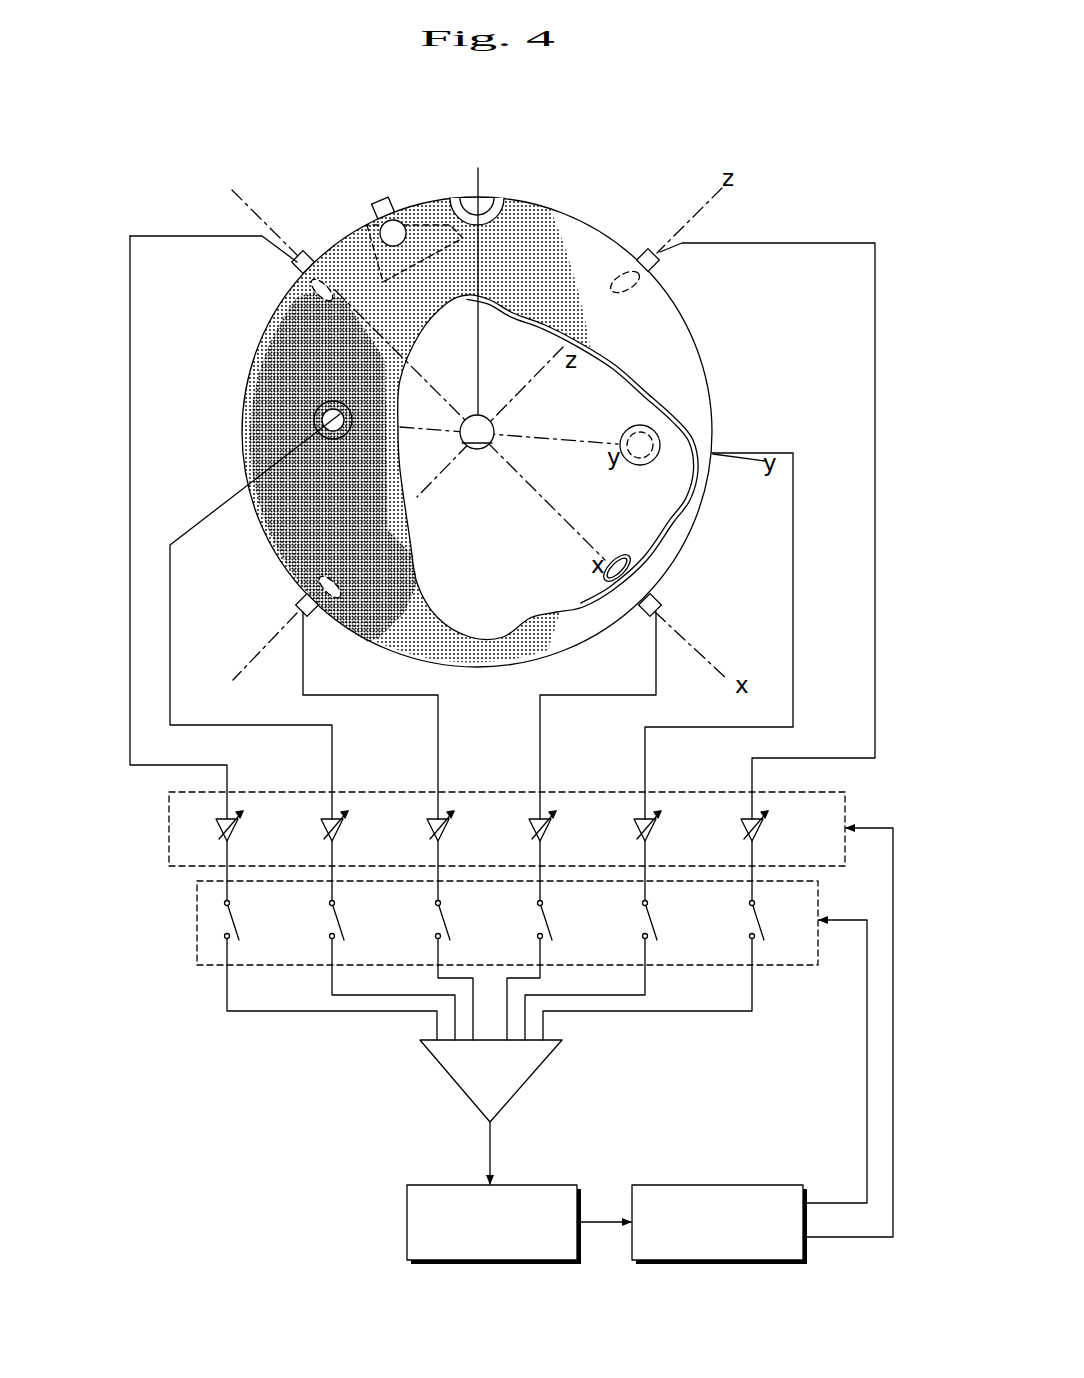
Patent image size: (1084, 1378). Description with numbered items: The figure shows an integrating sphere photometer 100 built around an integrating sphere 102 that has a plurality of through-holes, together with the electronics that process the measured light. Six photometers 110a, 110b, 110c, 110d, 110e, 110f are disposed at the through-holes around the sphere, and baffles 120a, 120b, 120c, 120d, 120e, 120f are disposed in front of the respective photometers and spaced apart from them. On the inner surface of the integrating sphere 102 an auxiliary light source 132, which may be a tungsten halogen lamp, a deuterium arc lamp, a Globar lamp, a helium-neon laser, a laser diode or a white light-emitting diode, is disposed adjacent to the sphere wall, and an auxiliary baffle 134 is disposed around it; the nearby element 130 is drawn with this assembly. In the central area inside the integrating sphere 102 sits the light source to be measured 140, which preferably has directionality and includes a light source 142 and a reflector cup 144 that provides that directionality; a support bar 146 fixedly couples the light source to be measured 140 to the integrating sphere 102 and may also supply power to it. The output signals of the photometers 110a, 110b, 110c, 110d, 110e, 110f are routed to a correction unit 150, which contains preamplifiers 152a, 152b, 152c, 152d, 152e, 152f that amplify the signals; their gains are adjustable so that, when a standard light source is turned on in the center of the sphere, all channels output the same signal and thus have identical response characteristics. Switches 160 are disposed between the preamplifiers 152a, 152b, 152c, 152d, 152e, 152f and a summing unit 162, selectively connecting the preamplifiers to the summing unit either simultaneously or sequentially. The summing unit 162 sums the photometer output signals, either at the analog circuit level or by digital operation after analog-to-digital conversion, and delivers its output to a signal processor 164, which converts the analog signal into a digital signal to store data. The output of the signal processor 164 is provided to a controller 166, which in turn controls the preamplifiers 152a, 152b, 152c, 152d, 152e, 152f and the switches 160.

The integrating sphere photometer 100 is at (855, 124).
The integrating sphere 102 is at (562, 205).
The photometer 110a is at (661, 603).
The photometer 110b is at (659, 440).
The photometer 110c is at (645, 250).
The photometer 110d is at (304, 254).
The photometer 110e is at (320, 422).
The photometer 110f is at (299, 601).
The baffle 120a is at (634, 562).
The baffle 120b is at (655, 431).
The baffle 120c is at (643, 284).
The baffle 120d is at (316, 292).
The baffle 120e is at (318, 412).
The baffle 120f is at (336, 600).
The light source 130 is at (378, 202).
The auxiliary light source 132 is at (392, 220).
The auxiliary baffle 134 is at (432, 236).
The light source to be measured 140 is at (479, 487).
The light source 142 is at (468, 450).
The reflector cup 144 is at (486, 450).
The support bar 146 is at (478, 168).
The correction unit 150 is at (168, 831).
The preamplifier 152a is at (552, 840).
The preamplifier 152b is at (657, 840).
The preamplifier 152c is at (764, 840).
The preamplifier 152d is at (239, 840).
The preamplifier 152e is at (344, 840).
The preamplifier 152f is at (450, 840).
The switches 160 is at (196, 921).
The summing unit 162 is at (530, 1076).
The signal processor 164 is at (545, 1185).
The controller 166 is at (757, 1185).